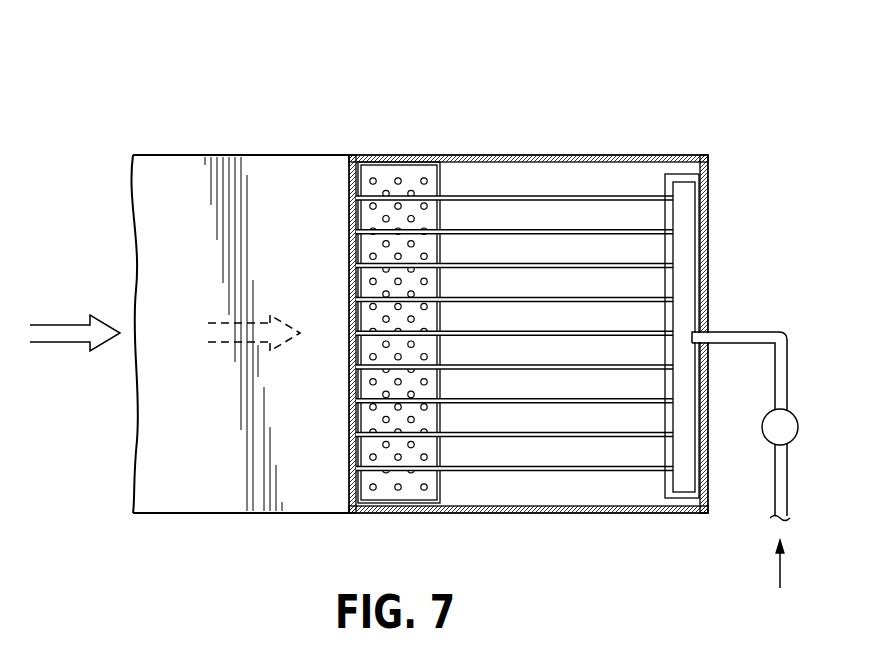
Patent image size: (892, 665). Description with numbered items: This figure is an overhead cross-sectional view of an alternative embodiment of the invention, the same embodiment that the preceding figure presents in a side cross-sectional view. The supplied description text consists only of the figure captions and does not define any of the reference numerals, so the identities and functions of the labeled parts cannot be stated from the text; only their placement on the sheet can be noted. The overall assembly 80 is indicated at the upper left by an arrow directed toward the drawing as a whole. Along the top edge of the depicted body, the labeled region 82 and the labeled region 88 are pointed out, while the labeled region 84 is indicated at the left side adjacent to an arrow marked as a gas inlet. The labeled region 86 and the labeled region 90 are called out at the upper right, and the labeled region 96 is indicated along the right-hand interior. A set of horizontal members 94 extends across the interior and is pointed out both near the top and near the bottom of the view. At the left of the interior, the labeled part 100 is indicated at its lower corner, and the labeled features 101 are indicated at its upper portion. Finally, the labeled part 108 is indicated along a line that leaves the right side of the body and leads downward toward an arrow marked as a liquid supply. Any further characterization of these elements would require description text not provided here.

The gas treatment system 80 is at (441, 337).
The duct 82 is at (286, 147).
The gas stream 84 is at (157, 382).
The housing chamber 86 is at (624, 184).
The duct inlet wall 88 is at (173, 155).
The housing wall 90 is at (708, 178).
The electrode tubes 94 is at (575, 232).
The liquid manifold 96 is at (686, 276).
The perforated plate frame 100 is at (443, 483).
The perforations 101 is at (411, 191).
The liquid supply line 108 is at (788, 366).